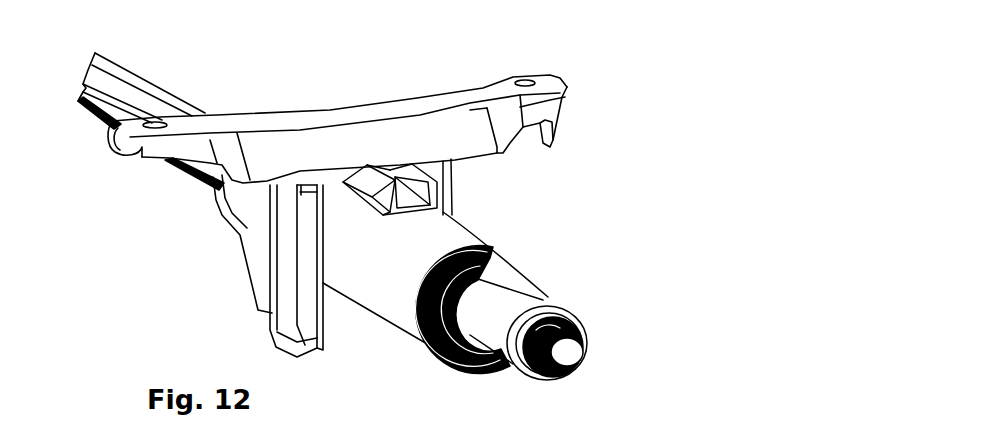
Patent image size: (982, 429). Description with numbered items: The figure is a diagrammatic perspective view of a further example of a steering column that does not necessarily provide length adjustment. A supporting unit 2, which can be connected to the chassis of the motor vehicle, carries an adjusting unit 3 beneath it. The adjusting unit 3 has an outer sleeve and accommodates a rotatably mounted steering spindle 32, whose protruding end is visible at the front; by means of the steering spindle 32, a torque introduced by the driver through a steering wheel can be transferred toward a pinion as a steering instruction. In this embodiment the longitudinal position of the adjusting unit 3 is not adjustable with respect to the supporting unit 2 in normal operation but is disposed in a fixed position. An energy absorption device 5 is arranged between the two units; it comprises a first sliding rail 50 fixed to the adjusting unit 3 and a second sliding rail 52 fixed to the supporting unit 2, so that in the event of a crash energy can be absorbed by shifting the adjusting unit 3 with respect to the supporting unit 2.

The supporting unit 2 is at (380, 130).
The adjusting unit 3 is at (447, 242).
The energy absorption device 5 is at (390, 237).
The steering spindle 32 is at (493, 308).
The first sliding rail 50 is at (440, 210).
The second sliding rail 52 is at (415, 170).